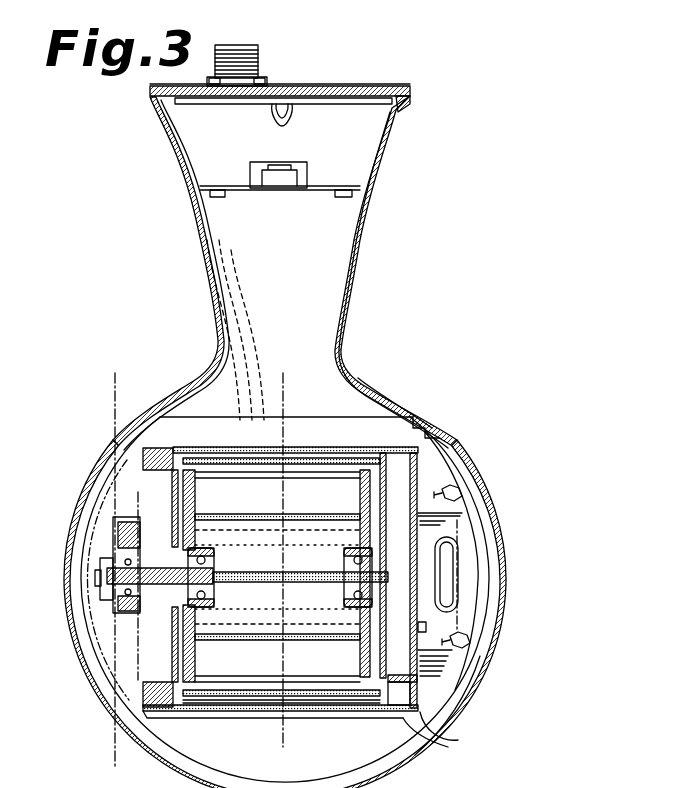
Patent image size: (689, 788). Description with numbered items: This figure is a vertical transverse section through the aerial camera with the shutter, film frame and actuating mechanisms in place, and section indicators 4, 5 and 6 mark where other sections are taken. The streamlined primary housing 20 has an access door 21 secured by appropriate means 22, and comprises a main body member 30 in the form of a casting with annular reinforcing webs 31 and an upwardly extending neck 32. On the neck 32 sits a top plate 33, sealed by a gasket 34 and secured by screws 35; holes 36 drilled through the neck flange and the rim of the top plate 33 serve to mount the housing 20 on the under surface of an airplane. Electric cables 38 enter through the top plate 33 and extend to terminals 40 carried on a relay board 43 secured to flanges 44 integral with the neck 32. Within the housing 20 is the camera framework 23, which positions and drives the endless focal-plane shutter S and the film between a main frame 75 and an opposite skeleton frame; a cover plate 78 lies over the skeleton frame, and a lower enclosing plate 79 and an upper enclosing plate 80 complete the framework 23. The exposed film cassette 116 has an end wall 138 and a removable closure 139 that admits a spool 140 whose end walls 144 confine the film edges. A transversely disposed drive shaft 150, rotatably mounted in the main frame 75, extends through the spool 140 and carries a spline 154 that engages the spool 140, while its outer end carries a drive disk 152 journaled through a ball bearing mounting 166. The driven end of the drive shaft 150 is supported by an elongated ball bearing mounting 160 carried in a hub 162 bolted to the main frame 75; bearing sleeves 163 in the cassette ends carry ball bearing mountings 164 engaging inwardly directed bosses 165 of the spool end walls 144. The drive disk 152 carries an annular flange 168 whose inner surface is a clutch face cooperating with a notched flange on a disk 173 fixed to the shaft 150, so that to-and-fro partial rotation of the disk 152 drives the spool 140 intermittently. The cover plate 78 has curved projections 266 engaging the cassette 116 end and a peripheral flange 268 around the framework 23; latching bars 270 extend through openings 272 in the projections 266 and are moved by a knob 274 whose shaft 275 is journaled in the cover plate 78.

The primary housing 20 is at (296, 442).
The access door 21 is at (493, 518).
The securing means 22 is at (464, 490).
The camera framework 23 is at (308, 440).
The main body member 30 is at (384, 388).
The annular reinforcing webs 31 is at (405, 408).
The neck 32 is at (367, 228).
The top plate 33 is at (365, 86).
The gasket 34 is at (333, 86).
The screws 35 is at (399, 89).
The holes 36 is at (285, 97).
The electric cables 38 is at (258, 56).
The terminals 40 is at (289, 167).
The relay board 43 is at (307, 190).
The flanges 44 is at (352, 197).
The main frame 75 is at (118, 668).
The cover plate 78 is at (488, 600).
The lower enclosing plate 79 is at (231, 712).
The upper enclosing plate 80 is at (233, 444).
The exposed film cassette 116 is at (294, 680).
The end wall 138 is at (196, 662).
The removable closure 139 is at (370, 680).
The spool 140 is at (256, 670).
The end walls 144 is at (362, 500).
The drive shaft 150 is at (240, 562).
The drive disk 152 is at (126, 534).
The spline 154 is at (257, 572).
The ball bearing mounting 160 is at (108, 596).
The hub 162 is at (137, 518).
The bearing sleeves 163 is at (220, 592).
The ball bearing mountings 164 is at (205, 608).
The bosses 165 is at (208, 548).
The ball bearing mounting 166 is at (101, 578).
The annular flange 168 is at (121, 624).
The disk 173 is at (121, 553).
The curved projections 266 is at (448, 514).
The peripheral flange 268 is at (440, 730).
The latching bars 270 is at (424, 627).
The openings 272 is at (489, 668).
The knob 274 is at (451, 573).
The shaft 275 is at (460, 543).
The focal-plane shutter S is at (204, 447).
The section line 4- 4 is at (138, 492).
The section line 5- 5 is at (283, 376).
The section line 6- 6 is at (115, 376).